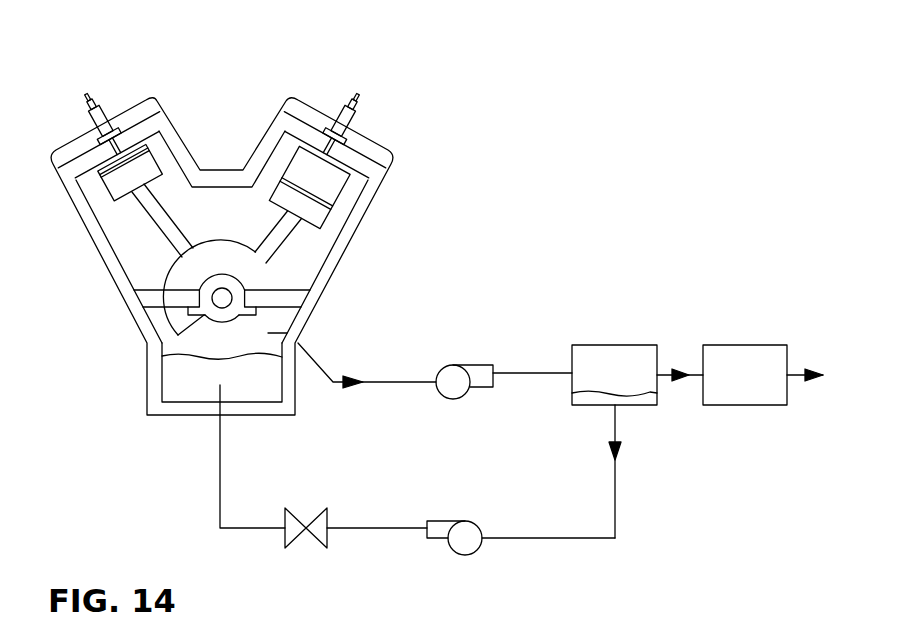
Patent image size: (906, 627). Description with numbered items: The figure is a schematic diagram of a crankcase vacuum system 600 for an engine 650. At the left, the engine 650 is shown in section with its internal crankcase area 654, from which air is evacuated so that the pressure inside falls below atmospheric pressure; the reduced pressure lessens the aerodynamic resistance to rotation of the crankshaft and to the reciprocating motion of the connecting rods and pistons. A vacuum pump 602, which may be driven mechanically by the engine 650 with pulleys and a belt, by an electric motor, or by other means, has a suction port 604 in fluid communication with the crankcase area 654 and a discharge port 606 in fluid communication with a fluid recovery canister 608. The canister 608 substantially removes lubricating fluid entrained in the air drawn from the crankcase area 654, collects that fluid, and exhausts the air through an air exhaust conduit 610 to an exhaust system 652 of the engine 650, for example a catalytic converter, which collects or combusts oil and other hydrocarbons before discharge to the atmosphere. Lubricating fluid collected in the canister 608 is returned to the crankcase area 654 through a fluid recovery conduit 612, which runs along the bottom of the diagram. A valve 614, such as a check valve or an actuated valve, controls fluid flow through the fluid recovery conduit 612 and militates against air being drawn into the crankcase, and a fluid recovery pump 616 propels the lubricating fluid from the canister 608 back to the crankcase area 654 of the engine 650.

The crankcase vacuum system 600 is at (703, 240).
The vacuum pump 602 is at (453, 400).
The suction port 604 is at (398, 383).
The discharge port 606 is at (497, 375).
The fluid recovery canister 608 is at (614, 345).
The air exhaust conduit 610 is at (667, 370).
The fluid recovery conduit 612 is at (615, 470).
The valve 614 is at (327, 548).
The fluid recovery pump 616 is at (457, 553).
The engine 650 is at (300, 77).
The exhaust system 652 is at (745, 405).
The crankcase area 654 is at (127, 252).